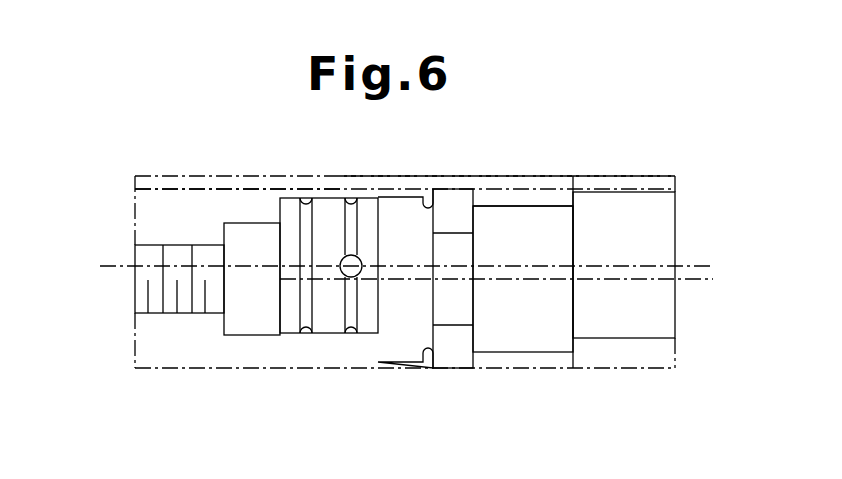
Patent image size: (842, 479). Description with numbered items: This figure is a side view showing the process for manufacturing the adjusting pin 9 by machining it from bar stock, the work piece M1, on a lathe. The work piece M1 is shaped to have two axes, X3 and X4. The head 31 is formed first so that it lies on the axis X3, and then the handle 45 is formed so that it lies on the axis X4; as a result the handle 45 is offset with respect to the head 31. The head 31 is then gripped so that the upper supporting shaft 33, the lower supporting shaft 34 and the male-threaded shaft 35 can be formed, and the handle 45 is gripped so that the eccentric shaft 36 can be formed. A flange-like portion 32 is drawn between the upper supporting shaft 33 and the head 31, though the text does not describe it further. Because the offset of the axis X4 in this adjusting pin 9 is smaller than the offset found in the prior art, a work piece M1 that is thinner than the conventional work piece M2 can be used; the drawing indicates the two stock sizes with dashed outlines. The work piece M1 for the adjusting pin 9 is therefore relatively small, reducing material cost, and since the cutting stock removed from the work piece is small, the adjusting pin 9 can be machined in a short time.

The adjusting pin 9 is at (527, 206).
The head 31 is at (567, 306).
The flange 32 is at (470, 248).
The upper supporting shaft 33 is at (426, 303).
The lower supporting shaft 34 is at (238, 333).
The male-threaded shaft 35 is at (149, 249).
The eccentric shaft 36 is at (285, 208).
The handle 45 is at (667, 228).
The work piece M1 is at (271, 191).
The conventional work piece M2 is at (340, 176).
The axis X3 is at (519, 281).
The axis X4 is at (385, 267).